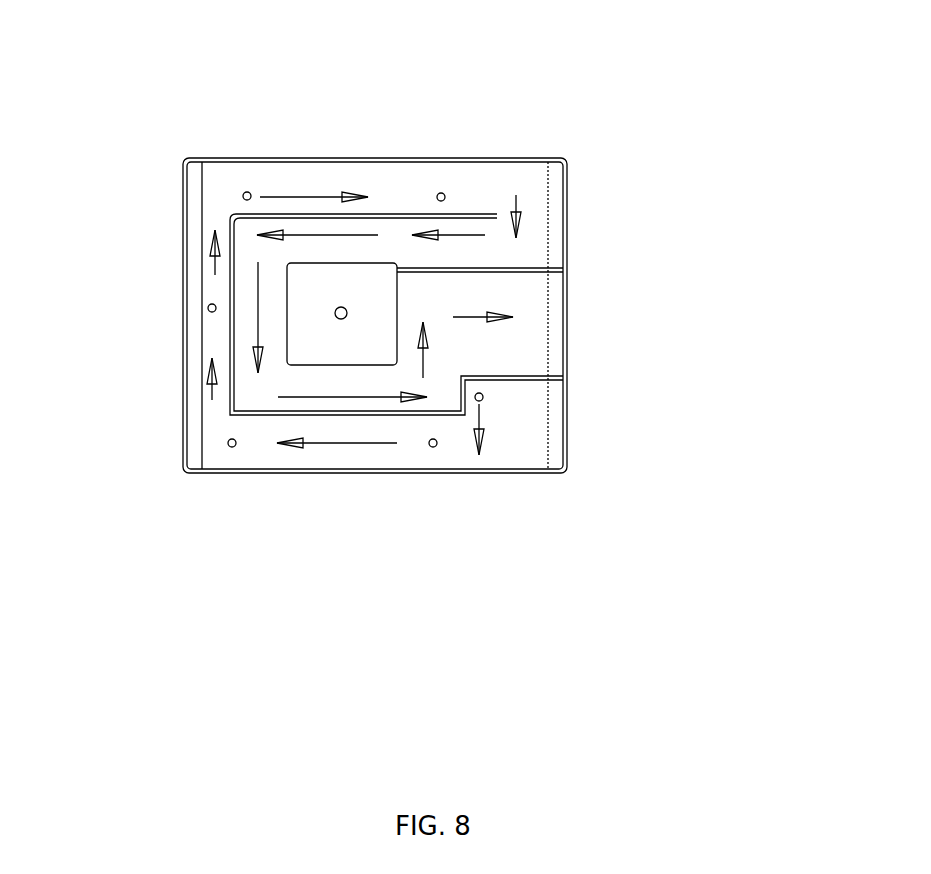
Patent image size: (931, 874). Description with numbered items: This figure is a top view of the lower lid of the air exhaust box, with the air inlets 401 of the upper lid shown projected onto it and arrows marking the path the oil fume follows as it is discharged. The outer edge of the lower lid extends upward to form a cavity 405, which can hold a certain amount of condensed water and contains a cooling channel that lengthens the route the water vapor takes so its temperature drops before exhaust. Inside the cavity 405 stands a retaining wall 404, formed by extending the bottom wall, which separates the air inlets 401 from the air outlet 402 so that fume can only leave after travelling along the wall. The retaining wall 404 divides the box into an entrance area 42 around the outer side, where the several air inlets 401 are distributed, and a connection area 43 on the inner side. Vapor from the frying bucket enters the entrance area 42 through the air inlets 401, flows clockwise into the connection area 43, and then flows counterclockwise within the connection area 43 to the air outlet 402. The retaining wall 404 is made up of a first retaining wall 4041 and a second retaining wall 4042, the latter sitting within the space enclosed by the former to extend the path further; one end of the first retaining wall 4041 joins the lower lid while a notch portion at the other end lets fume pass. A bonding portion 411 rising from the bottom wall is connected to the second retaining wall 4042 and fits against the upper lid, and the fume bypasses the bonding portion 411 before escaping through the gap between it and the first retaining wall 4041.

The entrance area 42 is at (308, 178).
The connection area 43 is at (240, 407).
The air inlet 401 is at (247, 192).
The air outlet 402 is at (560, 320).
The retaining wall 404 is at (725, 122).
The first retaining wall 4041 is at (468, 214).
The second retaining wall 4042 is at (510, 268).
The cavity 405 is at (212, 335).
The bonding portion 411 is at (318, 352).